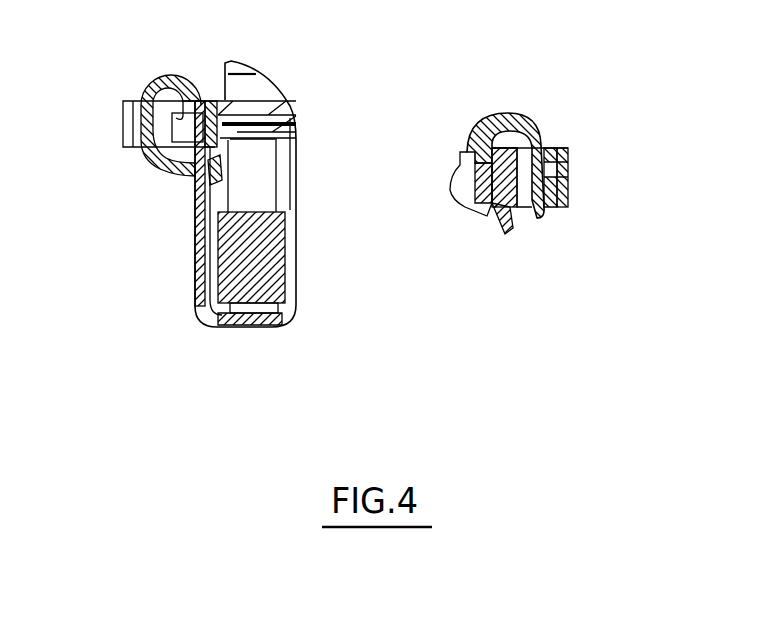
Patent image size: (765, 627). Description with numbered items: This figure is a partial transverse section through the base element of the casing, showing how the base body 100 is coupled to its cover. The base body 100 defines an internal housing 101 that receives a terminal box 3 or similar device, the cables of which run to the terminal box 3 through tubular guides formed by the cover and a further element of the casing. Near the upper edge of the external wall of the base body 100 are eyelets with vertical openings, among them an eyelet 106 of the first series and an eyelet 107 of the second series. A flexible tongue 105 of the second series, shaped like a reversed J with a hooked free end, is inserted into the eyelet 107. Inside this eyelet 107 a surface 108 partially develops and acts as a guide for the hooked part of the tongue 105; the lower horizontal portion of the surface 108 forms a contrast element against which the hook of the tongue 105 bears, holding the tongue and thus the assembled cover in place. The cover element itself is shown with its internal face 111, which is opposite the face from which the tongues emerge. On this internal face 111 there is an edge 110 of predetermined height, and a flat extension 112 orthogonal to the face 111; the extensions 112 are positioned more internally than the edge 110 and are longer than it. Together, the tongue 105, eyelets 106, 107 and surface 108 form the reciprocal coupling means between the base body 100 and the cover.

The terminal box 3 is at (220, 314).
The base body 100 is at (264, 330).
The internal housing 101 is at (205, 262).
The flexible tongue of the second series 105 is at (505, 115).
The eyelet of the first series 106 is at (123, 109).
The eyelet of the second series 107 is at (568, 177).
The surface 108 is at (553, 130).
The edge 110 is at (163, 163).
The internal face 111 is at (463, 185).
The flat extension 112 is at (203, 188).